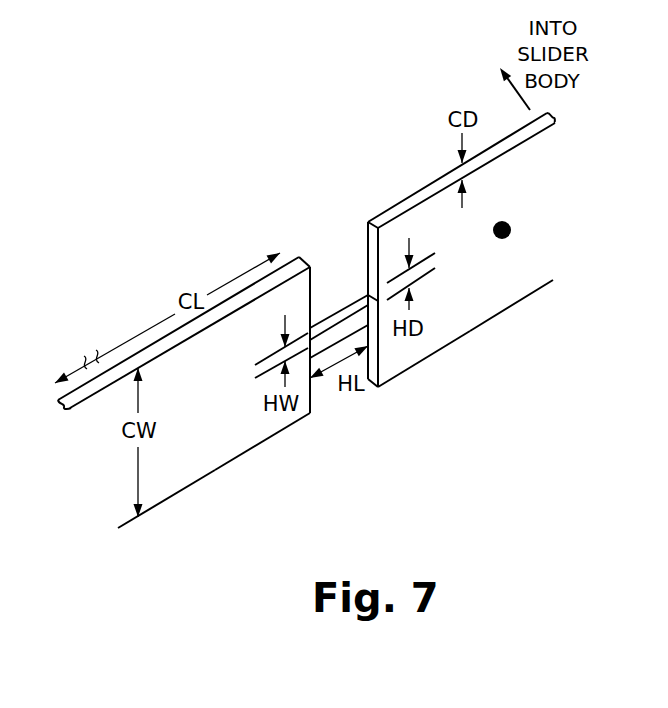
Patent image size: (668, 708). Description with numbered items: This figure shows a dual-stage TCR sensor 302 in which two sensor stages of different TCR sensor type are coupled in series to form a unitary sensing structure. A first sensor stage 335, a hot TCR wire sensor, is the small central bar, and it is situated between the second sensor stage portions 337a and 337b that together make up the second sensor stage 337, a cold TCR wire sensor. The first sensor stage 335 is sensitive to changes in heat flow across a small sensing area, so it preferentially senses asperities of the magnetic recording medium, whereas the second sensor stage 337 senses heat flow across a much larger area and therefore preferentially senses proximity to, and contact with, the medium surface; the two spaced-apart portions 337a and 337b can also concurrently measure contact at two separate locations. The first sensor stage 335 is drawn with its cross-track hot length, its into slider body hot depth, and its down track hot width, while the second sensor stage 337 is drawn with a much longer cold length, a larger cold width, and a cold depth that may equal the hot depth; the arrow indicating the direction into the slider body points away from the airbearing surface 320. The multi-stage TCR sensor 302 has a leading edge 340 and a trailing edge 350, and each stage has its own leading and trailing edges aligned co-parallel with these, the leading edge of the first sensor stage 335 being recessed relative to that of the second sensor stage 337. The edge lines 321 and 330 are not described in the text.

The dual-stage TCR sensor 302 is at (311, 160).
The trailing edge 350 is at (402, 172).
The airbearing surface 320 is at (510, 232).
The first sensor stage 335 is at (346, 311).
The second sensor stage portion 337b is at (507, 293).
The second plate 330 is at (461, 361).
The second sensor stage 337 is at (432, 396).
The first plate bottom edge 321 is at (255, 423).
The second sensor stage portion 337a is at (170, 476).
The leading edge 340 is at (226, 482).